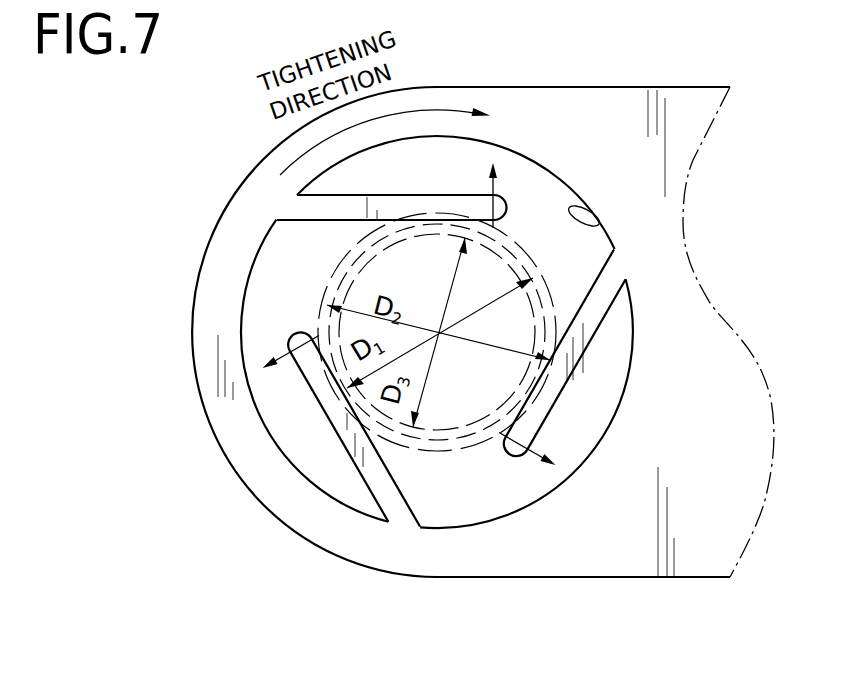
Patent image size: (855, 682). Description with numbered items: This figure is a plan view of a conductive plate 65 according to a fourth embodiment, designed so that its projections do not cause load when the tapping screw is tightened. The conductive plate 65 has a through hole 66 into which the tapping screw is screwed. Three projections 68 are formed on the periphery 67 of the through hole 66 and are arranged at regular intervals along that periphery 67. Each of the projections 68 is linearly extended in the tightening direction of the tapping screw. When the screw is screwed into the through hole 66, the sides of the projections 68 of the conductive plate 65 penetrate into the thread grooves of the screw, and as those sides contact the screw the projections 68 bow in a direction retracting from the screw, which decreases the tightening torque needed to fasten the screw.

The conductive plate 65 is at (600, 80).
The through hole 66 is at (290, 262).
The periphery 67 is at (572, 207).
The projections 68 is at (343, 207).